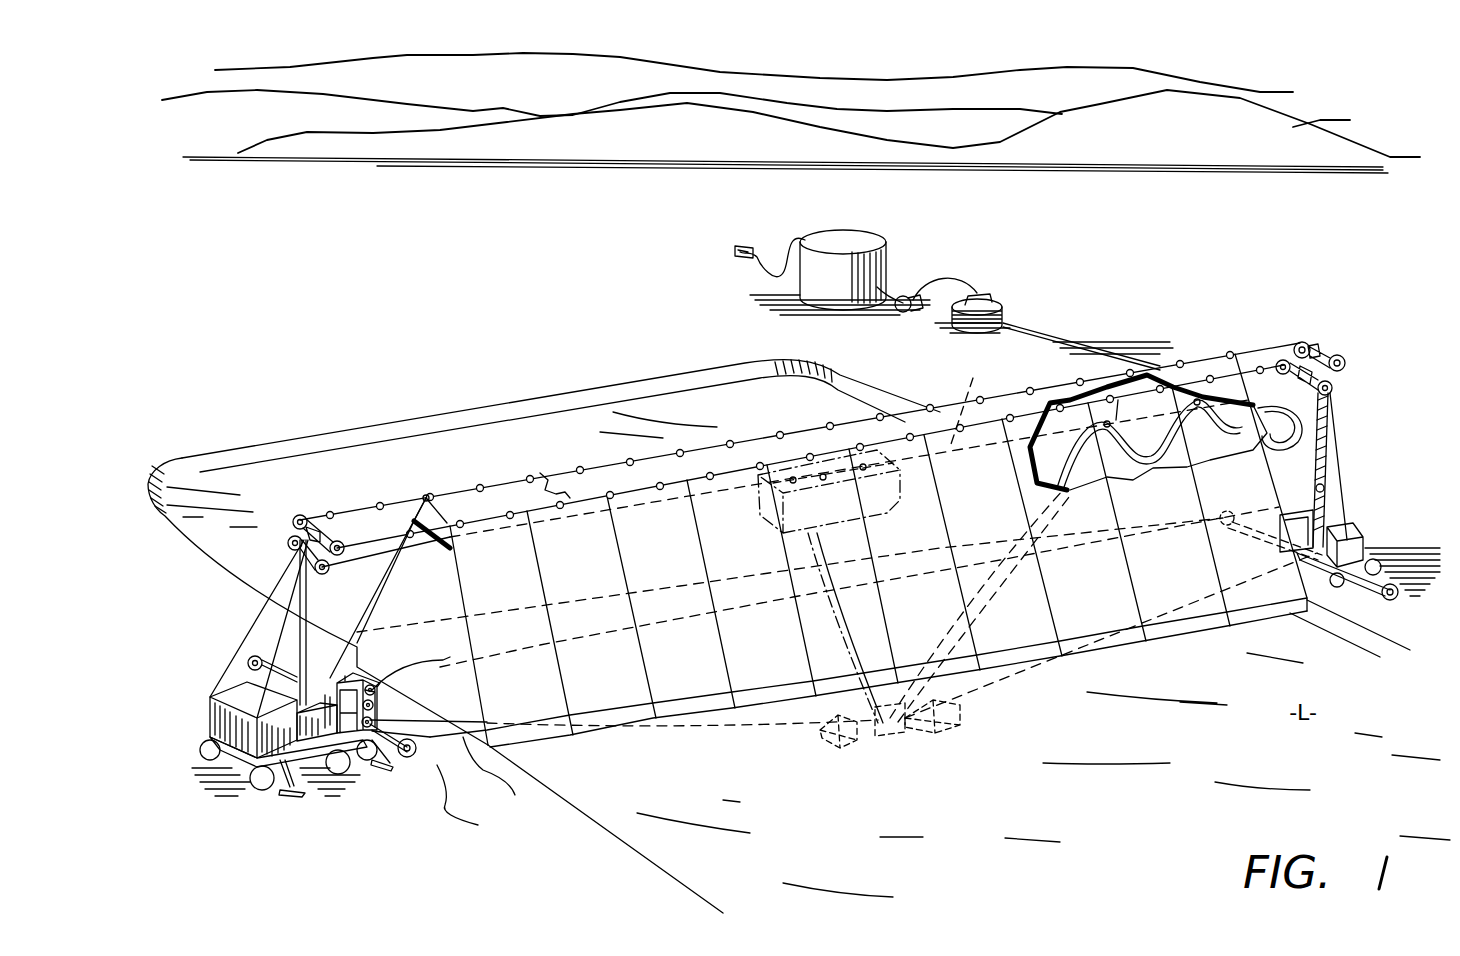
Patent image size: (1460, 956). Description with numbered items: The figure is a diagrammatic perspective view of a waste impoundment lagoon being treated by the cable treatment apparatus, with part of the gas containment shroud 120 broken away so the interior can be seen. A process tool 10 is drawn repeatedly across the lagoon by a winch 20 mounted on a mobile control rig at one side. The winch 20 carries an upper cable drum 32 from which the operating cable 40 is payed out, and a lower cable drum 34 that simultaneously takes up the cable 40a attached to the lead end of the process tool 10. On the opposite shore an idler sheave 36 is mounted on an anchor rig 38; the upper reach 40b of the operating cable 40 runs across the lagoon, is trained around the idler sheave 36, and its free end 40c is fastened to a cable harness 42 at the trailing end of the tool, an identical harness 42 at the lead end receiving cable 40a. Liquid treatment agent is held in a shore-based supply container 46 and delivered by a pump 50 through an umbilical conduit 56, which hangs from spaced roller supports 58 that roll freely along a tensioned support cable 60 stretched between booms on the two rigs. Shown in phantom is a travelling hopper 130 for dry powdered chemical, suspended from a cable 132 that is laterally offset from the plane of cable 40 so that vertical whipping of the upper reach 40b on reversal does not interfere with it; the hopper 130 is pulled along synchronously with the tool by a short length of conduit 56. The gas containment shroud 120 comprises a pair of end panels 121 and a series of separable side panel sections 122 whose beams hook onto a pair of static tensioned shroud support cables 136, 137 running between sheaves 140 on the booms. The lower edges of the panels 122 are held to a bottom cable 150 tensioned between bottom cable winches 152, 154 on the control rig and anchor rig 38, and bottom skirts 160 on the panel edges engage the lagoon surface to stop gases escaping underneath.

The process tool 10 is at (896, 736).
The winch 20 is at (356, 789).
The upper cable drum 32 is at (372, 712).
The lower cable drum 34 is at (400, 722).
The idler sheave 36 is at (1325, 488).
The anchor rig 38 is at (1358, 545).
The operating cable 40 is at (733, 597).
The cable 40a is at (756, 735).
The upper reach of operating cable 40b is at (378, 688).
The free end of operating cable 40c is at (1068, 666).
The cable harness 42 is at (985, 718).
The supply container 46 is at (850, 238).
The pump 50 is at (903, 306).
The umbilical conduit 56 is at (1083, 466).
The roller supports 58 is at (1116, 420).
The tensioned support cable 60 is at (1095, 386).
The gas containment shroud 120 is at (1187, 347).
The end panels 121 is at (393, 583).
The side panel sections 122 is at (832, 549).
The travelling hopper 130 is at (798, 468).
The cable 132 is at (970, 401).
The shroud support cable 136 is at (427, 495).
The shroud support cable 137 is at (452, 512).
The sheaves 140 is at (300, 515).
The bottom cable 150 is at (503, 777).
The bottom cable winch 152 is at (477, 802).
The bottom cable winch 154 is at (1392, 600).
The bottom skirts 160 is at (545, 732).